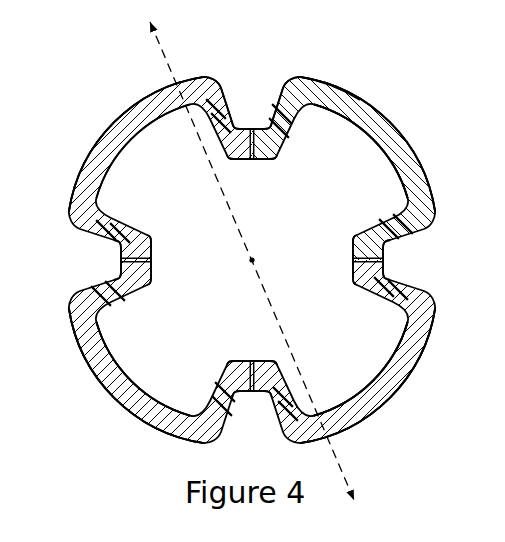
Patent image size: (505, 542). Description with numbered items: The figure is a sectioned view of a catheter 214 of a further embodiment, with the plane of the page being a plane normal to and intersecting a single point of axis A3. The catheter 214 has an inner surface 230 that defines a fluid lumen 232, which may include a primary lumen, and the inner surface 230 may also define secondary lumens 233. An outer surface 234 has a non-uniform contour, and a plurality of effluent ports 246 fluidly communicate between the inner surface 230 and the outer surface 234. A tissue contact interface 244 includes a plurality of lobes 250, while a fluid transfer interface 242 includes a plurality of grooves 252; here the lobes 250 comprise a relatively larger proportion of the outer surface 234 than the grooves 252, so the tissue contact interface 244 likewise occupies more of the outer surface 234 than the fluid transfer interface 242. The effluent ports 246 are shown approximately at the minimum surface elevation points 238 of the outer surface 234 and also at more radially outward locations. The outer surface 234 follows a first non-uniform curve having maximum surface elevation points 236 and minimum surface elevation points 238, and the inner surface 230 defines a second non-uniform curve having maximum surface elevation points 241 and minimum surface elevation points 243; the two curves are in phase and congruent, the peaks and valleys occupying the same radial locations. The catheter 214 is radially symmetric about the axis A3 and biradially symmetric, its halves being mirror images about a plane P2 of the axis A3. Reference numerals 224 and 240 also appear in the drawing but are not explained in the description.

The catheter 214 is at (463, 118).
The seal body 224 is at (418, 164).
The inner surface 230 is at (378, 295).
The fluid lumen 232 is at (284, 270).
The secondary lumens 233 is at (384, 187).
The outer surface 234 is at (337, 433).
The maximum surface elevation points 236 is at (112, 125).
The minimum surface elevation points 238 is at (248, 126).
The seal assembly 240 is at (11, 43).
The maximum surface elevation points 241 is at (130, 149).
The fluid transfer interface 242 is at (73, 289).
The minimum surface elevation points 243 is at (153, 256).
The tissue contact interface 244 is at (99, 139).
The effluent ports 246 is at (253, 162).
The lobes 250 is at (330, 93).
The grooves 252 is at (236, 78).
The axis A3 is at (250, 258).
The plane P2 is at (278, 266).